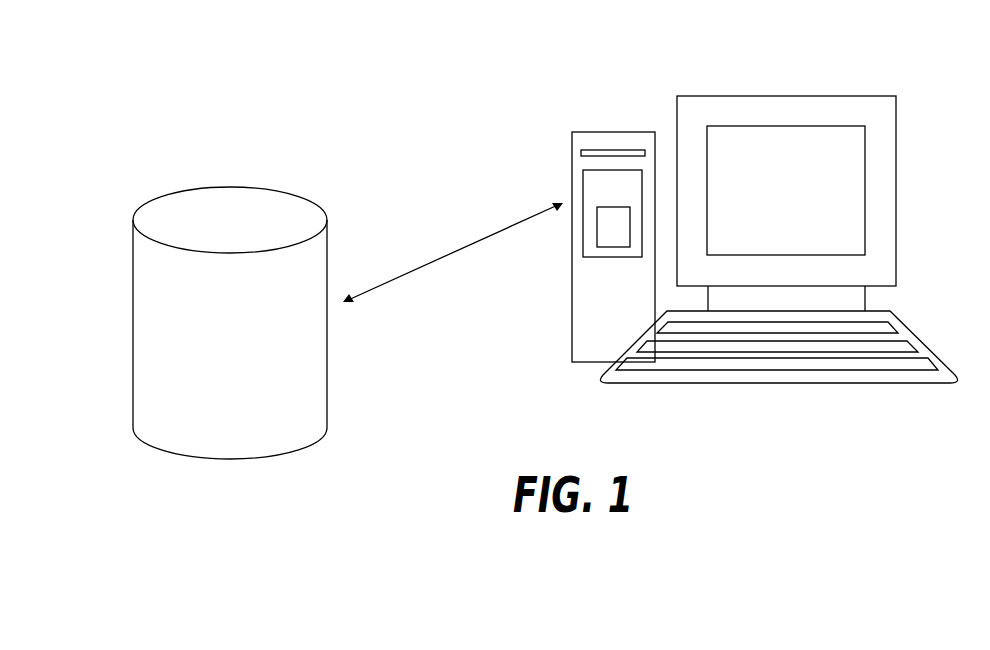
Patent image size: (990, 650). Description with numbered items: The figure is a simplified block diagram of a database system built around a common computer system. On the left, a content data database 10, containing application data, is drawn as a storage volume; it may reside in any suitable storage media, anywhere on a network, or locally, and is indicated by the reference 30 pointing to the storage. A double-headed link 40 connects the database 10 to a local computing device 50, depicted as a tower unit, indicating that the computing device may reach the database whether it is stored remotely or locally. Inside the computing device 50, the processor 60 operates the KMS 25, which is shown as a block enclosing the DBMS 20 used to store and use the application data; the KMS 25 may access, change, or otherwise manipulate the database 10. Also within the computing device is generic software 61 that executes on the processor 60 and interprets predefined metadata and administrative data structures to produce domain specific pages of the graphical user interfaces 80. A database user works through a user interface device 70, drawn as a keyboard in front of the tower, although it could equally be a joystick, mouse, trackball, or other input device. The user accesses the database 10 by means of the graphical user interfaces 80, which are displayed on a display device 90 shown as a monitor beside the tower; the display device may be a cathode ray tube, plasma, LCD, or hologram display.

The content data database 10 is at (218, 341).
The DBMS 20 is at (604, 241).
The KMS 25 is at (612, 213).
The data storage 30 is at (245, 176).
The communication link 40 is at (445, 256).
The local computing device 50 is at (614, 132).
The processor 60 is at (603, 293).
The generic software 61 is at (603, 333).
The user interface device 70 is at (927, 338).
The graphical user interfaces 80 is at (776, 179).
The display device 90 is at (869, 86).